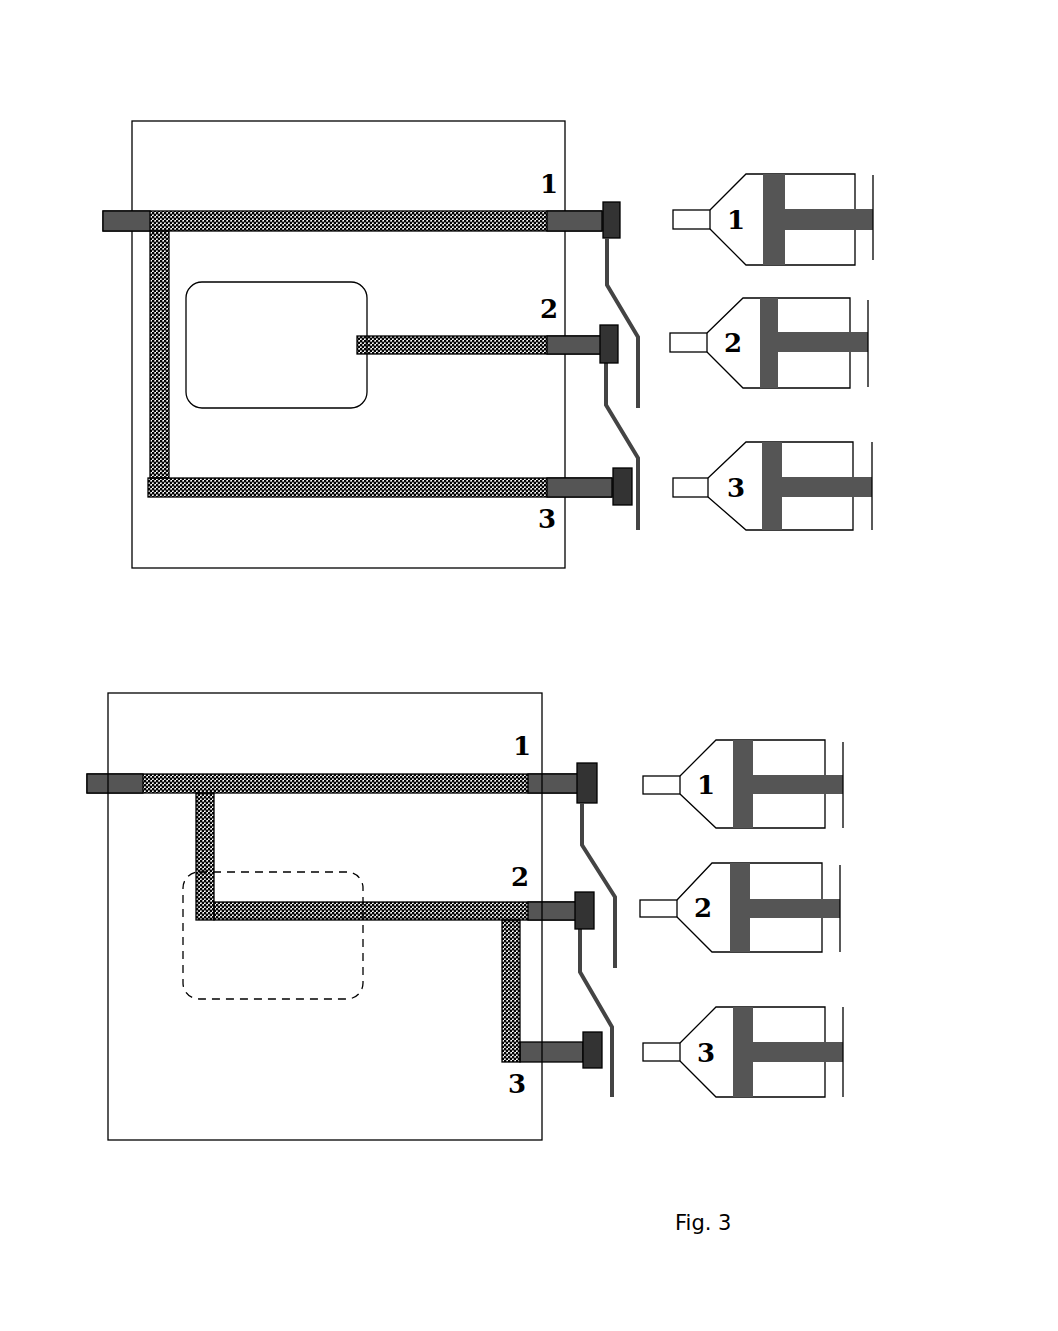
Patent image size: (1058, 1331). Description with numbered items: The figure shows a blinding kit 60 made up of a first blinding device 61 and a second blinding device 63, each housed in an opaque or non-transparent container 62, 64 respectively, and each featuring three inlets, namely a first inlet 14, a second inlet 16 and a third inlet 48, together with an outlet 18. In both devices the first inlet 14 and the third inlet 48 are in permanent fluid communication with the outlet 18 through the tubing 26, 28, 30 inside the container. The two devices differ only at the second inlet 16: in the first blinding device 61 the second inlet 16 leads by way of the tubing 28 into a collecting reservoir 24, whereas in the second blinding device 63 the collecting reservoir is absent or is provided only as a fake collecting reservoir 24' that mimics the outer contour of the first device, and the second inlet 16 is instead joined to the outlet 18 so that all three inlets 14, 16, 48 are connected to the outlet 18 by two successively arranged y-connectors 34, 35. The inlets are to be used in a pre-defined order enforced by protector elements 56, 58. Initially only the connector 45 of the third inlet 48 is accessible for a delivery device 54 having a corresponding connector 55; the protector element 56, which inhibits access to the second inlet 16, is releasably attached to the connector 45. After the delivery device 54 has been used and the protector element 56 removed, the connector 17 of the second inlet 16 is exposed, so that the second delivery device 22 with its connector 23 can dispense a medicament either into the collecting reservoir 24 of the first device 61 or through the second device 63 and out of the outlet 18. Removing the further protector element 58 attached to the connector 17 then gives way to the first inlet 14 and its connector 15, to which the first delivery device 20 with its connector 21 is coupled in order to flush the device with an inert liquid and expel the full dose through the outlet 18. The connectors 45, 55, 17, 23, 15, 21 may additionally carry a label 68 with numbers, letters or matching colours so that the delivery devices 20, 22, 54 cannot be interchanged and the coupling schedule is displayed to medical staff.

The blinding kit 60 is at (100, 647).
The first blinding device 61 is at (268, 78).
The container 62 is at (418, 121).
The second blinding device 63 is at (287, 662).
The container 64 is at (414, 692).
The first inlet 14 is at (584, 522).
The connector 15 is at (632, 506).
The second inlet 16 is at (578, 375).
The connector 17 is at (606, 330).
The outlet 18 is at (115, 232).
The first delivery device 20 is at (823, 531).
The connector 21 is at (686, 477).
The second delivery device 22 is at (805, 376).
The connector 23 is at (688, 332).
The collecting reservoir 24 is at (321, 347).
The fake collecting reservoir 24' is at (320, 940).
The tube 26 is at (360, 210).
The tubing 28 is at (450, 335).
The tube 30 is at (482, 477).
The y-connector 34 is at (506, 901).
The y-connector 35 is at (163, 210).
The connector 45 is at (612, 201).
The third inlet 48 is at (577, 185).
The delivery device 54 is at (815, 173).
The connector 55 is at (690, 209).
The protector element 56 is at (640, 384).
The protector element 58 is at (640, 519).
The label 68 is at (548, 287).